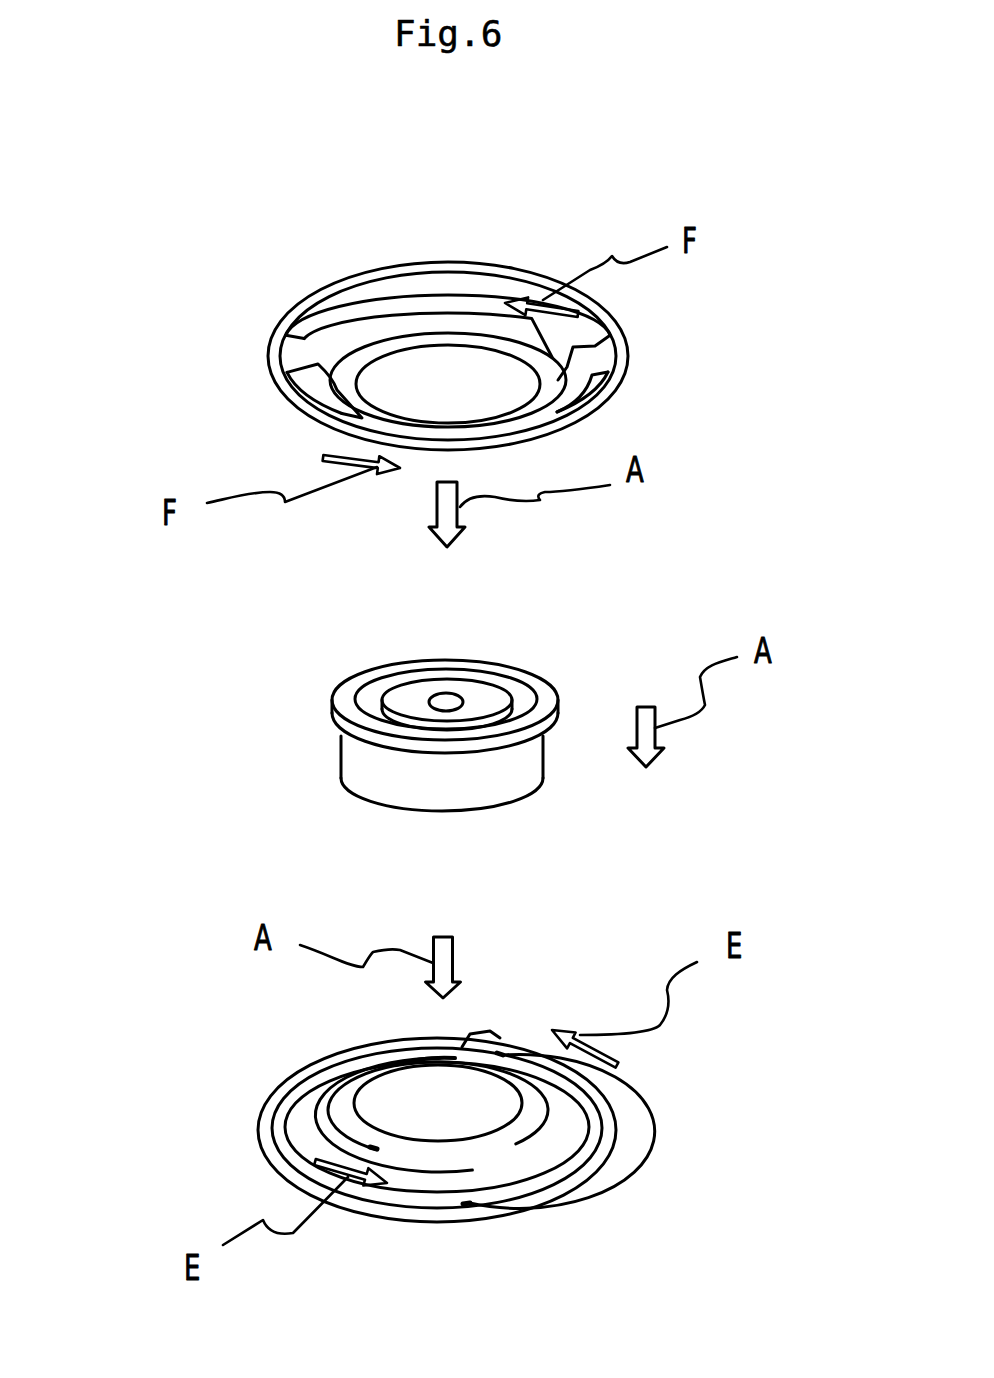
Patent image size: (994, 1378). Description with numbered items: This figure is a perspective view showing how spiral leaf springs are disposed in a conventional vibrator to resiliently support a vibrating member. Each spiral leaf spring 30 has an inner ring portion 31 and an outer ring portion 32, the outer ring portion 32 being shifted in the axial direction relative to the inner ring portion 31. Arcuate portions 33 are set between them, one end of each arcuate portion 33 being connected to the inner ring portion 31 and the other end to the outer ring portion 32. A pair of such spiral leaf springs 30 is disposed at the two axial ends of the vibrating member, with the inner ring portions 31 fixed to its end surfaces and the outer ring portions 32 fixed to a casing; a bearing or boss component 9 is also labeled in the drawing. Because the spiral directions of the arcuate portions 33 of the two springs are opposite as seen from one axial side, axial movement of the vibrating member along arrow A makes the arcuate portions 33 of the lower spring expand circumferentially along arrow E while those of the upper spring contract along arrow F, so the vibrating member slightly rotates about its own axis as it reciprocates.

The bearing / boss component 9 is at (558, 705).
The spiral leaf spring 30 is at (283, 268).
The inner ring portion 31 is at (417, 345).
The outer ring portion 32 is at (510, 268).
The arcuate portion 33 is at (455, 297).